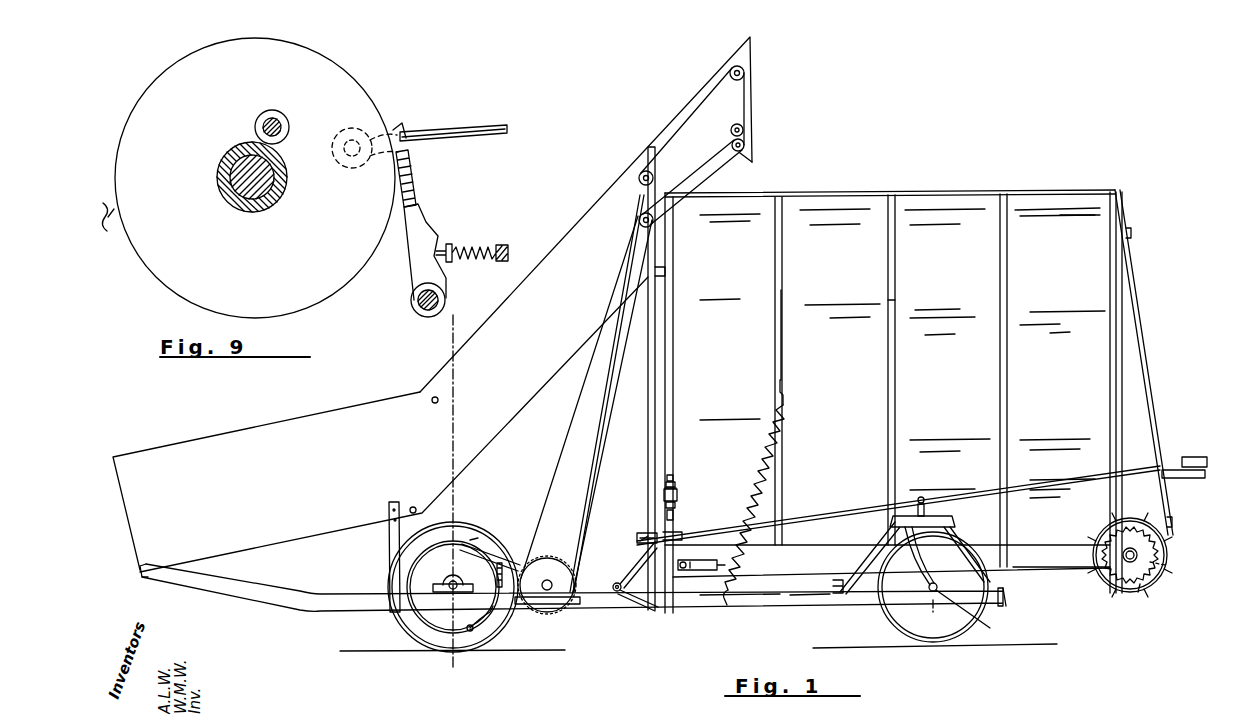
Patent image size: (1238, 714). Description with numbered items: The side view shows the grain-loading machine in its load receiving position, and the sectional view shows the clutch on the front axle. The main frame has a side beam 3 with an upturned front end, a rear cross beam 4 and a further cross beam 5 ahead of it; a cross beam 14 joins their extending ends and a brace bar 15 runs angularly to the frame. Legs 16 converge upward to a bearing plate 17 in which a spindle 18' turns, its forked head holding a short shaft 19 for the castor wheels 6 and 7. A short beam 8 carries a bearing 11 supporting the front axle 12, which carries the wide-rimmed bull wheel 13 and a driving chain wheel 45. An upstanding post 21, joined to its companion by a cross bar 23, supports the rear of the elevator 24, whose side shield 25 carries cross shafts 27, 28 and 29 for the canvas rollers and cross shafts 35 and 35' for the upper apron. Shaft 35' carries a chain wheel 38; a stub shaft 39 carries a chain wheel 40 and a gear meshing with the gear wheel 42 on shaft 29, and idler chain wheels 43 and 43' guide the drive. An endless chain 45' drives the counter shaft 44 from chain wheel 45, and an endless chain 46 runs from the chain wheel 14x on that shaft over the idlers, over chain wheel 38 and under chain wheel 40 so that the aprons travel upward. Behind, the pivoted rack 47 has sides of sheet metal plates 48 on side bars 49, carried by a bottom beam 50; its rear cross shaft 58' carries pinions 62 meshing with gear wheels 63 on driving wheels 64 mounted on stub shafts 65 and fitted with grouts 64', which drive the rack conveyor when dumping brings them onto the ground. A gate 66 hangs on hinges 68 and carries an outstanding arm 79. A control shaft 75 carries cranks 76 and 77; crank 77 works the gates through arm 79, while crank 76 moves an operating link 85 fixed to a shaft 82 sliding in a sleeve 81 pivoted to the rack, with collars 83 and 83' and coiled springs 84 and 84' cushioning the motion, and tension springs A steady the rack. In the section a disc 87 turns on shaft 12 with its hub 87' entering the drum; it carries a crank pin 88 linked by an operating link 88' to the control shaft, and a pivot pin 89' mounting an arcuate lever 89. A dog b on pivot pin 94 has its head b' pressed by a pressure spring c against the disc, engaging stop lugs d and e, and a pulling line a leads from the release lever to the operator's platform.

In FIG. 9, the disc 87 is at (248, 177).
In FIG. 9, the hub of disc 87' is at (250, 192).
In FIG. 9, the front axle 12 is at (247, 182).
In FIG. 1, the front axle 12 is at (452, 580).
In FIG. 9, the pivot pin 89' is at (279, 113).
In FIG. 9, the crank pin 88 is at (358, 164).
In FIG. 9, the operating link 88' is at (453, 116).
In FIG. 1, the operating link 88' is at (617, 532).
In FIG. 9, the stop lug d is at (405, 132).
In FIG. 9, the stop lug e is at (112, 222).
In FIG. 9, the head of dog b' is at (425, 178).
In FIG. 9, the dog b is at (430, 252).
In FIG. 9, the pressure spring c is at (492, 246).
In FIG. 9, the pivot pin 94 is at (412, 302).
In FIG. 1, the side shield 25 is at (559, 252).
In FIG. 1, the chain wheel 38 is at (729, 74).
In FIG. 1, the cross shaft 35' is at (768, 103).
In FIG. 1, the stub shaft 39 is at (744, 128).
In FIG. 1, the chain wheel 40 is at (730, 132).
In FIG. 1, the cross shaft 29 is at (745, 146).
In FIG. 1, the gear wheel 42 is at (733, 156).
In FIG. 1, the idler chain wheel 43 is at (624, 174).
In FIG. 1, the idler chain wheel 43' is at (618, 228).
In FIG. 1, the upstanding post 21 is at (648, 450).
In FIG. 1, the cross bar 23 is at (666, 272).
In FIG. 1, the bearing 11 is at (674, 548).
In FIG. 1, the pivoted rack 47 is at (893, 391).
In FIG. 1, the side bar 49 is at (896, 302).
In FIG. 1, the sheet metal plate 48 is at (1073, 215).
In FIG. 1, the hinge 68 is at (1174, 521).
In FIG. 1, the gate 66 is at (1158, 420).
In FIG. 1, the elevator 24 is at (380, 424).
In FIG. 1, the castor wheel 6 is at (692, 504).
In FIG. 1, the cross shaft 35 is at (457, 401).
In FIG. 1, the cross shaft 28 is at (416, 506).
In FIG. 1, the cross shaft 27 is at (148, 566).
In FIG. 1, the side beam 3 is at (575, 612).
In FIG. 1, the brace bar 15 is at (745, 608).
In FIG. 1, the castor wheel 7 is at (780, 612).
In FIG. 1, the cross beam 5 is at (838, 594).
In FIG. 1, the bull wheel 13 is at (405, 625).
In FIG. 1, the driving chain wheel 45 is at (452, 611).
In FIG. 1, the short beam 8 is at (475, 623).
In FIG. 1, the chain wheel 14x is at (515, 545).
In FIG. 1, the endless chain 45' is at (490, 525).
In FIG. 1, the counter shaft 44 is at (550, 578).
In FIG. 1, the endless chain 46 is at (555, 465).
In FIG. 1, the pulling line a is at (601, 405).
In FIG. 1, the crank 77 is at (623, 564).
In FIG. 1, the control shaft 75 is at (615, 592).
In FIG. 1, the crank 76 is at (660, 610).
In FIG. 1, the arcuate lever 89 is at (922, 500).
In FIG. 1, the outstanding arm 79 is at (1184, 478).
In FIG. 1, the collar 83 is at (697, 463).
In FIG. 1, the shaft 82 is at (676, 484).
In FIG. 1, the coiled spring 84 is at (707, 478).
In FIG. 1, the sleeve 81 is at (678, 496).
In FIG. 1, the coiled spring 84' is at (709, 497).
In FIG. 1, the collar 83' is at (698, 517).
In FIG. 1, the operating link 85 is at (673, 585).
In FIG. 1, the tension spring A is at (762, 500).
In FIG. 1, the cross beam 14 is at (895, 608).
In FIG. 1, the short shaft 19 is at (969, 612).
In FIG. 1, the bearing plate 17 is at (947, 523).
In FIG. 1, the leg 16 is at (963, 552).
In FIG. 1, the spindle 18' is at (943, 530).
In FIG. 1, the bottom beam 50 is at (1050, 565).
In FIG. 1, the rear cross beam 4 is at (1004, 600).
In FIG. 1, the pinion 62 is at (1168, 548).
In FIG. 1, the driving wheel 64 is at (1135, 588).
In FIG. 1, the rear stub shaft 65 is at (1127, 551).
In FIG. 1, the gear wheel 63 is at (1113, 600).
In FIG. 1, the grout 64' is at (1139, 628).
In FIG. 1, the rear cross shaft 58' is at (1186, 569).